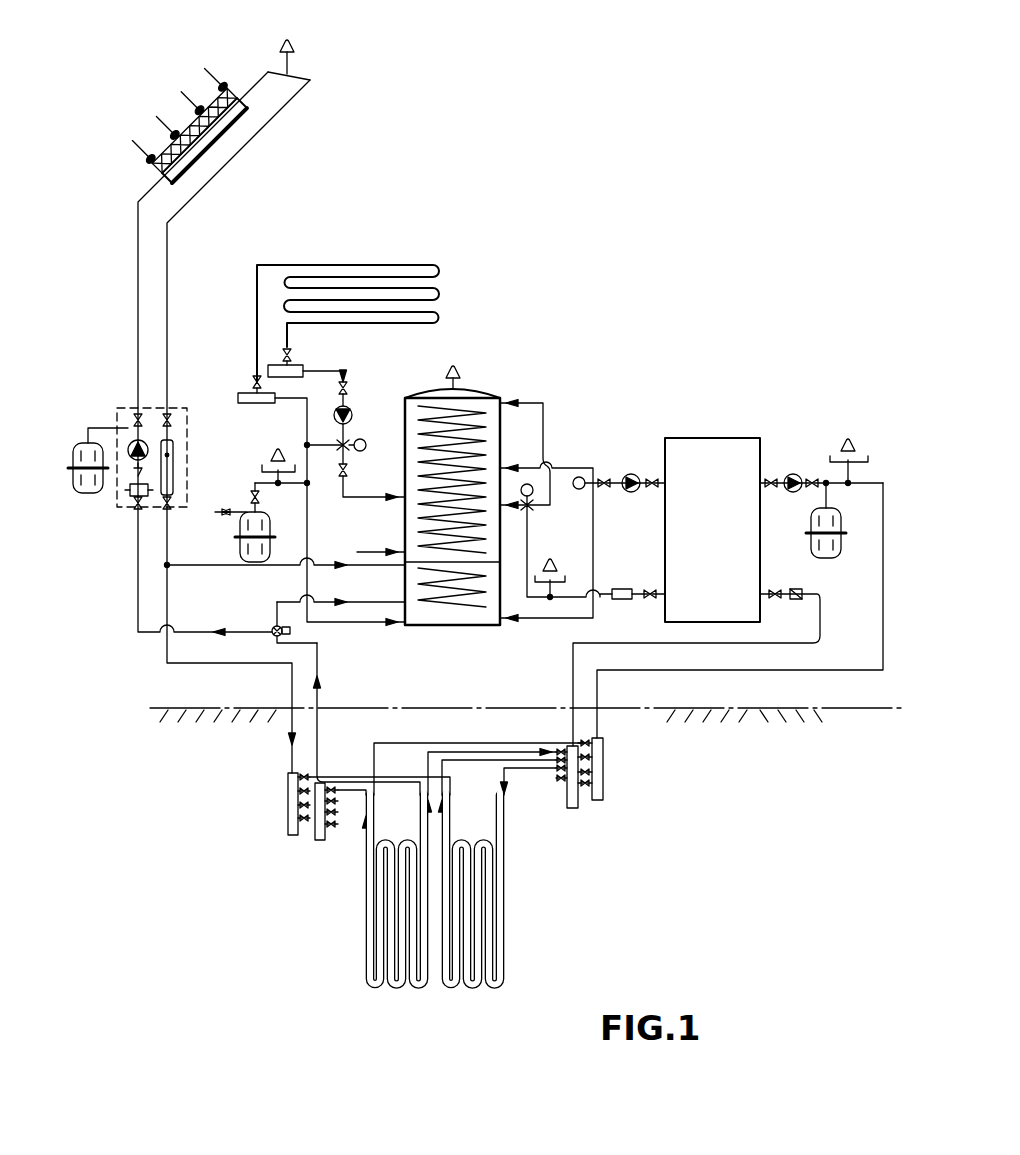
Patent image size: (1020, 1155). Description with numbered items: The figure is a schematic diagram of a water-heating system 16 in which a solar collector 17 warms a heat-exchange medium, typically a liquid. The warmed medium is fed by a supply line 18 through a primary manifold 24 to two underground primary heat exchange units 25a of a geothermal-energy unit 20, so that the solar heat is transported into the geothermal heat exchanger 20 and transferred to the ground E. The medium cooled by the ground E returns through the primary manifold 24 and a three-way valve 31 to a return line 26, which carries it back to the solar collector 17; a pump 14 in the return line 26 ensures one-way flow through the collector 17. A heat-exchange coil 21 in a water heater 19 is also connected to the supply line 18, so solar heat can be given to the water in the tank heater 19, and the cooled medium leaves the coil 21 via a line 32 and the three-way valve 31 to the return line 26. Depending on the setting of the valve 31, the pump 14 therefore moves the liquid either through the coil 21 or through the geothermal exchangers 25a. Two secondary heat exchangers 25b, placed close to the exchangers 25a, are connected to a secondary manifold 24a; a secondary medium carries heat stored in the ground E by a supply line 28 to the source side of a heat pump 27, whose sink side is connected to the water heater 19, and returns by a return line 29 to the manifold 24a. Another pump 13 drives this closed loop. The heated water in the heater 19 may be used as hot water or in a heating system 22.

The pump 13 is at (797, 476).
The pump 14 is at (126, 425).
The system 16 is at (532, 246).
The solar collector 17 is at (210, 92).
The supply line 18 is at (167, 325).
The water heater 19 is at (493, 386).
The geothermal-energy unit 20 is at (347, 958).
The heat-exchange coil 21 is at (447, 600).
The heating system 22 is at (393, 246).
The primary manifold 24 is at (278, 842).
The secondary manifold 24a is at (614, 769).
The primary heat exchange units 25a is at (468, 990).
The secondary heat exchangers 25b is at (432, 822).
The return line 26 is at (138, 322).
The heat pump 27 is at (718, 438).
The supply line 28 is at (870, 672).
The return line 29 is at (822, 640).
The three-way valve 31 is at (273, 626).
The line 32 is at (374, 604).
The ground E is at (208, 712).